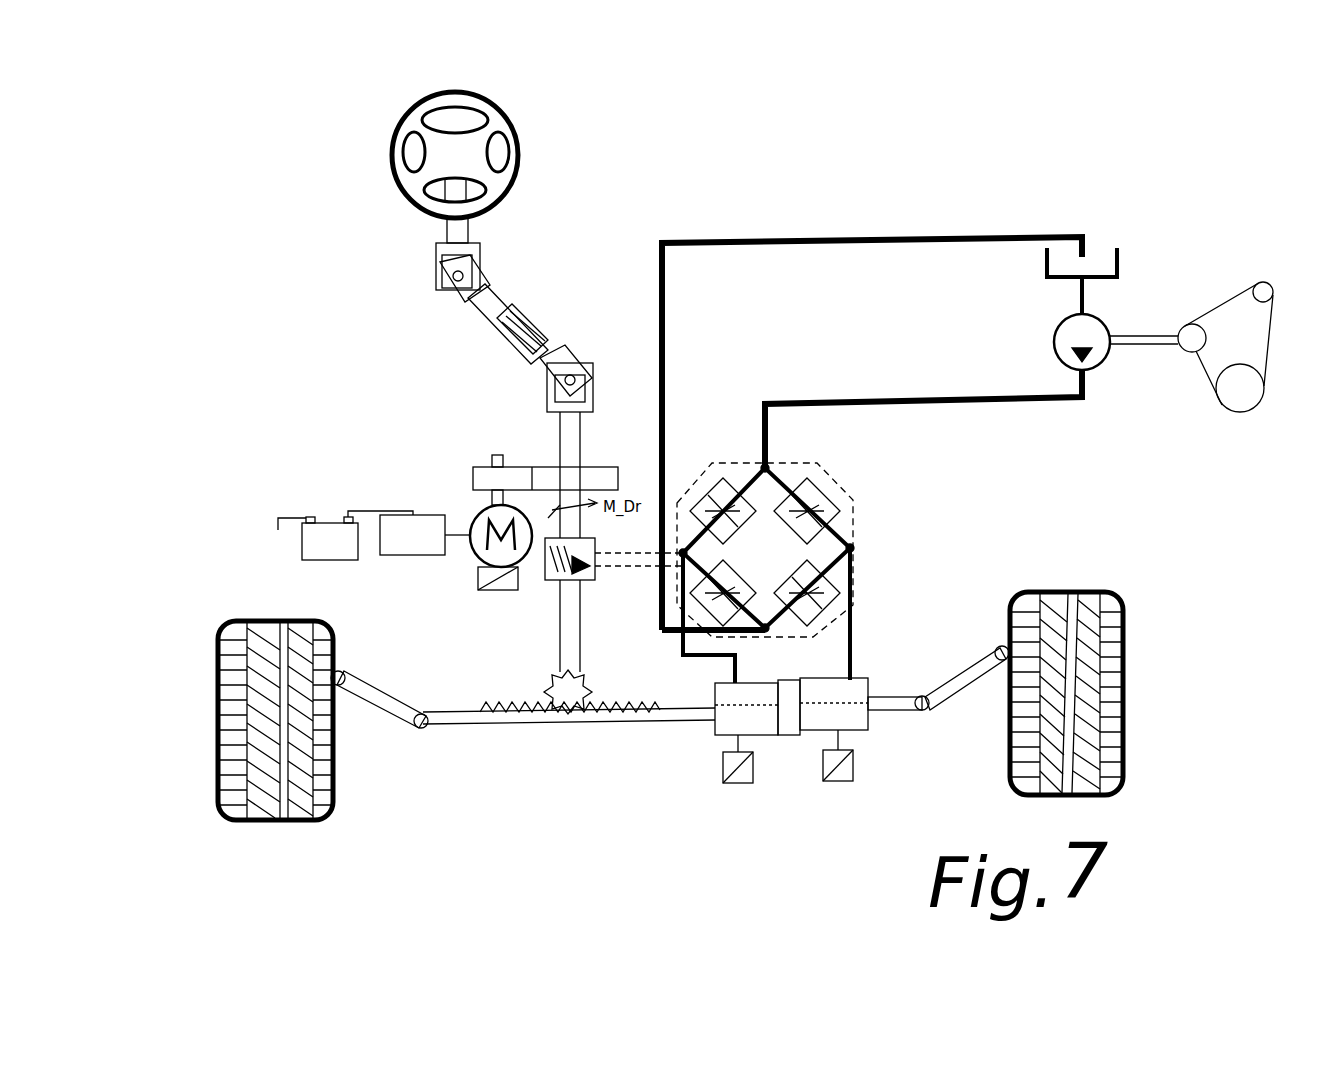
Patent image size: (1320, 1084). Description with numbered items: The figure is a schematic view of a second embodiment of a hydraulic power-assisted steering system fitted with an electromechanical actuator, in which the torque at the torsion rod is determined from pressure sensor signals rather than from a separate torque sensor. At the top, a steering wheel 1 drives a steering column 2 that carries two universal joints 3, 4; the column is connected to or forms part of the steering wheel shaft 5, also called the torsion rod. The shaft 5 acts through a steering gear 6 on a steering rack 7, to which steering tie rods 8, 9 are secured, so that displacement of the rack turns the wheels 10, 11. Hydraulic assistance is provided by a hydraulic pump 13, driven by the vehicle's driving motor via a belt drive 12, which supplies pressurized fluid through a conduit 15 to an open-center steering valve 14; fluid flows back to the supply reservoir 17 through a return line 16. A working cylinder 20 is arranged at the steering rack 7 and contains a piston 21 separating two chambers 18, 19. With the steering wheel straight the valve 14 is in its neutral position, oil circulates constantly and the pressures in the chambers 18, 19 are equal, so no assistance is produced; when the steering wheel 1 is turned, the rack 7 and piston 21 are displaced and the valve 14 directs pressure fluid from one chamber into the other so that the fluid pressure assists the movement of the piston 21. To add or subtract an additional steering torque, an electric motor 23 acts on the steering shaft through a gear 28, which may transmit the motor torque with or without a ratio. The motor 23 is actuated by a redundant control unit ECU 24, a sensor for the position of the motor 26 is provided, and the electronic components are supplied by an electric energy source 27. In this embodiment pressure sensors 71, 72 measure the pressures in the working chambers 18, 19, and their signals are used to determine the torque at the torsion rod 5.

The steering wheel 1 is at (518, 128).
The steering column 2 is at (545, 322).
The universal joint 3 is at (482, 250).
The universal joint 4 is at (598, 382).
The steering wheel shaft 5 is at (588, 442).
The steering gear 6 is at (550, 690).
The steering rack 7 is at (650, 718).
The steering tie rod 8 is at (382, 712).
The steering tie rod 9 is at (958, 687).
The wheel 10 is at (265, 618).
The wheel 11 is at (1078, 592).
The belt drive 12 is at (1218, 302).
The hydraulic pump 13 is at (1100, 364).
The steering valve 14 is at (832, 468).
The conduit 15 is at (843, 404).
The return line 16 is at (882, 238).
The supply reservoir 17 is at (1130, 262).
The chamber 18 is at (715, 728).
The chamber 19 is at (858, 735).
The working cylinder 20 is at (870, 682).
The piston 21 is at (790, 738).
The electric motor 23 is at (470, 546).
The control unit ECU 24 is at (430, 510).
The sensor for the position of the motor 26 is at (490, 595).
The electric energy source 27 is at (330, 520).
The gear 28 is at (545, 462).
The pressure sensor 71 is at (735, 786).
The pressure sensor 72 is at (832, 784).